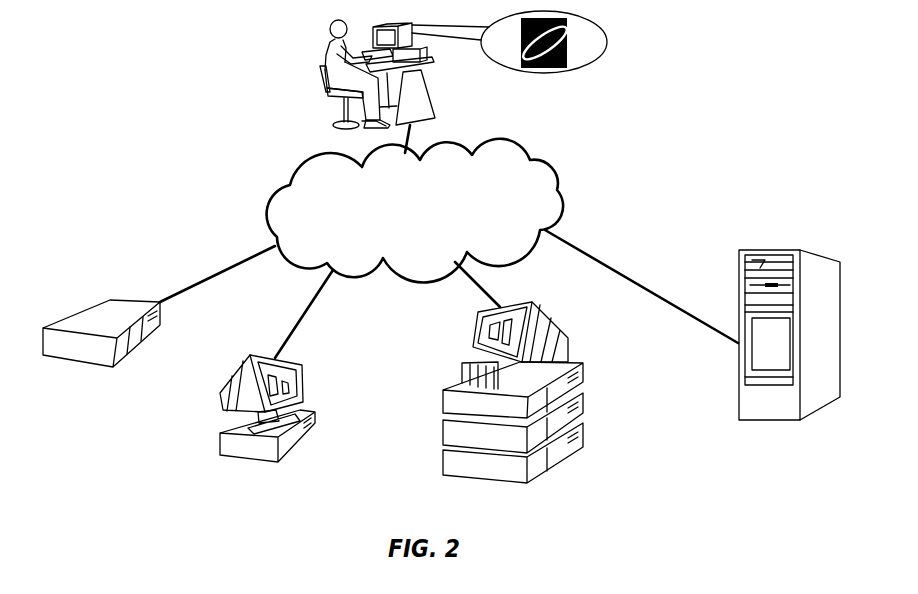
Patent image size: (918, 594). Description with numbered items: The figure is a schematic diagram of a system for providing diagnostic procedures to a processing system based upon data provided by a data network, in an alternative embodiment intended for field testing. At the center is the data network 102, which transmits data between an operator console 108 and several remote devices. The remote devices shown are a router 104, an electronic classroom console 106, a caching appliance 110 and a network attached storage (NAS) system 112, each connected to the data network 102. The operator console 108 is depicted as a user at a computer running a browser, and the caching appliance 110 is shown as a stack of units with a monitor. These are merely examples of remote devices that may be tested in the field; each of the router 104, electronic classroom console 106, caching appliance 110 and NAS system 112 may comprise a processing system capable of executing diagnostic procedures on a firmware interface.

The data network 102 is at (528, 147).
The router 104 is at (143, 345).
The electronic classroom console 106 is at (305, 385).
The operator console 108 is at (437, 97).
The caching appliance 110 is at (555, 330).
The network attached storage (NAS) system 112 is at (738, 278).